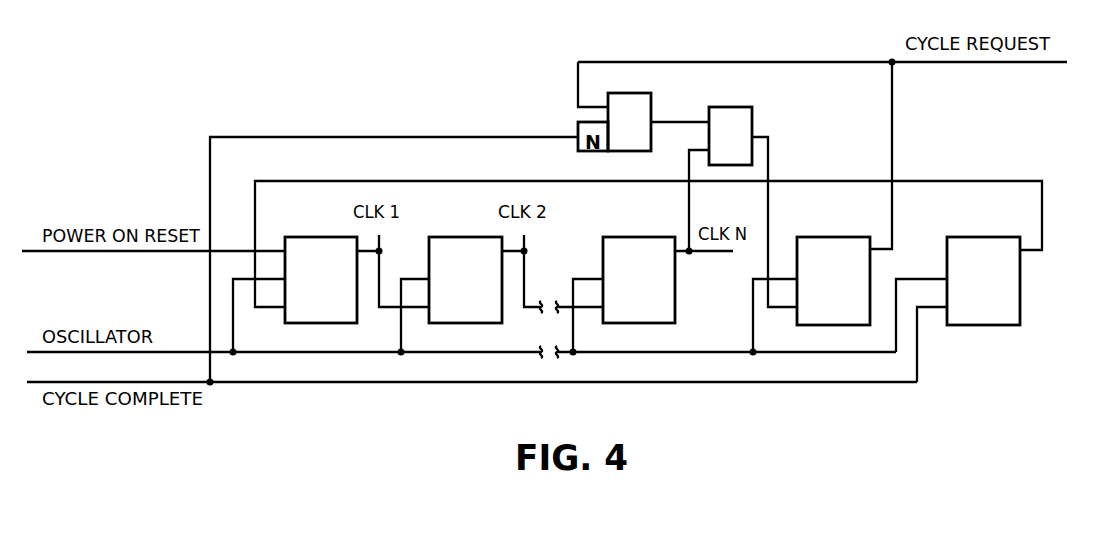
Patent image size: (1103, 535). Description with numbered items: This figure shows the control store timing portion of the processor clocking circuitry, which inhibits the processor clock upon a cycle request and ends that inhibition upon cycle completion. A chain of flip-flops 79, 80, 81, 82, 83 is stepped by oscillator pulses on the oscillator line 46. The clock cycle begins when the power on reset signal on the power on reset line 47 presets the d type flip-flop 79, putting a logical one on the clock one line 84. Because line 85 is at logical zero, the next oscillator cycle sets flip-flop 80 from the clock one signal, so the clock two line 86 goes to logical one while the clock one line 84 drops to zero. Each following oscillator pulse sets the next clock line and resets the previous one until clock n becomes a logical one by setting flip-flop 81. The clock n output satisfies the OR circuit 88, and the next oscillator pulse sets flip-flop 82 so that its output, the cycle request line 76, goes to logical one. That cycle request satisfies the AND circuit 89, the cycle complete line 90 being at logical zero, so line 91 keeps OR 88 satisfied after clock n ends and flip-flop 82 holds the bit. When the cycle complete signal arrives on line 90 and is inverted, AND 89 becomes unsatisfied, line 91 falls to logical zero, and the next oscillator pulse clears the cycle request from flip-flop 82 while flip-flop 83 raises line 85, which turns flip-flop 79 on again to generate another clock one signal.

The oscillator line 46 is at (461, 324).
The power on reset line 47 is at (153, 273).
The cycle request line 76 is at (822, 90).
The d type flip-flop 79 is at (321, 258).
The flip-flop 80 is at (464, 258).
The flip-flop 81 is at (638, 258).
The flip-flop 82 is at (832, 259).
The flip-flop 83 is at (982, 259).
The clock 1 line 84 is at (393, 271).
The line 85 is at (648, 219).
The clock 2 line 86 is at (553, 274).
The OR circuit 88 is at (752, 132).
The AND circuit 89 is at (619, 108).
The cycle complete line 90 is at (495, 375).
The line 91 is at (680, 99).